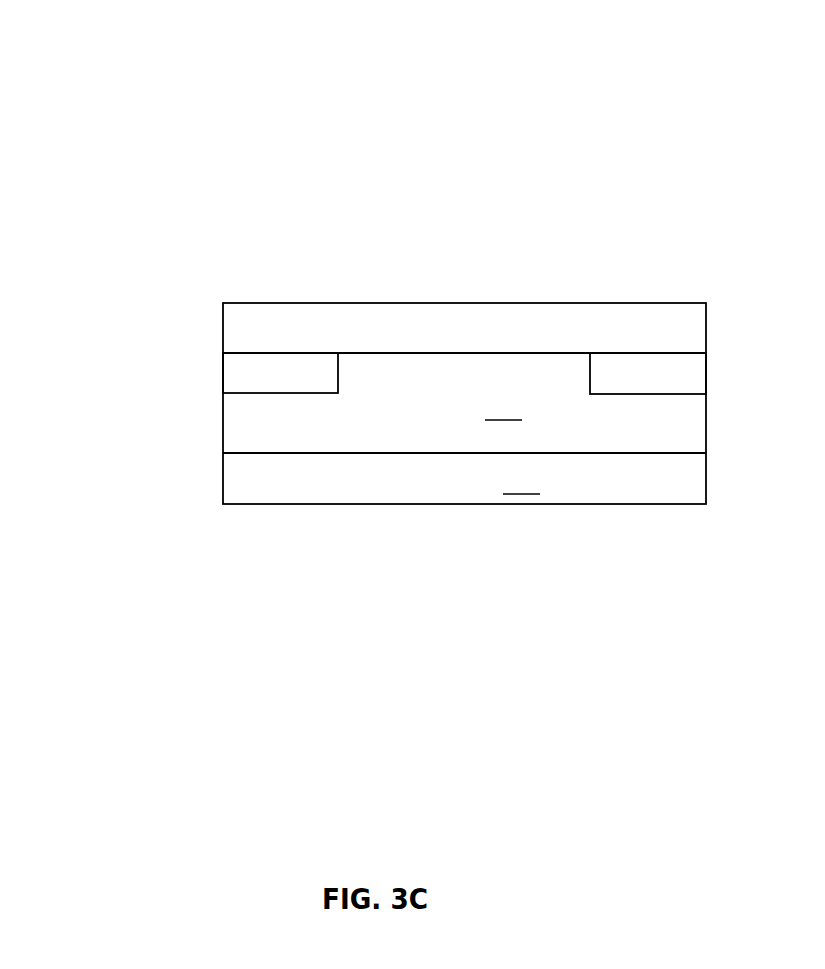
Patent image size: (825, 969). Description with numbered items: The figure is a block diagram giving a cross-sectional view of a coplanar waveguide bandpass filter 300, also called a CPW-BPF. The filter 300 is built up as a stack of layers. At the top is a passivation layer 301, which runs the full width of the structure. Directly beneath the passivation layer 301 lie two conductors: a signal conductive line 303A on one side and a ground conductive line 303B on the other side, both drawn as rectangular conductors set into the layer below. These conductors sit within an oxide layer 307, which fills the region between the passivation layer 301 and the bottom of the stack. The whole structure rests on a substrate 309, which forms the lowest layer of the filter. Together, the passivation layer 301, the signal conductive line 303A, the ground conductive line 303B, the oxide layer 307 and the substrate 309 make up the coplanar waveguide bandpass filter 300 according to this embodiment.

The coplanar waveguide bandpass filter 300 is at (215, 103).
The passivation layer 301 is at (464, 336).
The signal conductive line 303A is at (223, 382).
The ground conductive line 303B is at (706, 370).
The oxide layer 307 is at (465, 409).
The substrate 309 is at (464, 473).